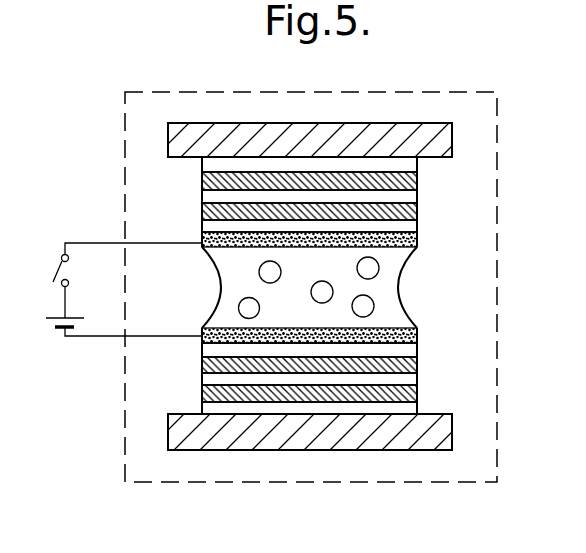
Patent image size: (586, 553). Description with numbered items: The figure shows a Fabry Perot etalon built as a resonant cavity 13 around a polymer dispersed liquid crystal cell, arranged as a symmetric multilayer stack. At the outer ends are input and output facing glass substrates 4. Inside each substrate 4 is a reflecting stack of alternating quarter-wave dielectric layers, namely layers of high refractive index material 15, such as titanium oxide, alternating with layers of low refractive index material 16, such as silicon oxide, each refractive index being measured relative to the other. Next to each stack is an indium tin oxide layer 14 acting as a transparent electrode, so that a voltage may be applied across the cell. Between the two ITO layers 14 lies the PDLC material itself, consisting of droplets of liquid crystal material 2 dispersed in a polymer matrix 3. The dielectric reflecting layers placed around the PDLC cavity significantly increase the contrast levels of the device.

The resonant cavity 13 is at (392, 87).
The glass substrate 4 is at (413, 136).
The high refractive index layer 15 is at (407, 167).
The low refractive index layer 16 is at (210, 213).
The indium tin oxide layer 14 is at (418, 247).
The polymer matrix 3 is at (385, 298).
The liquid crystal material 2 is at (380, 272).